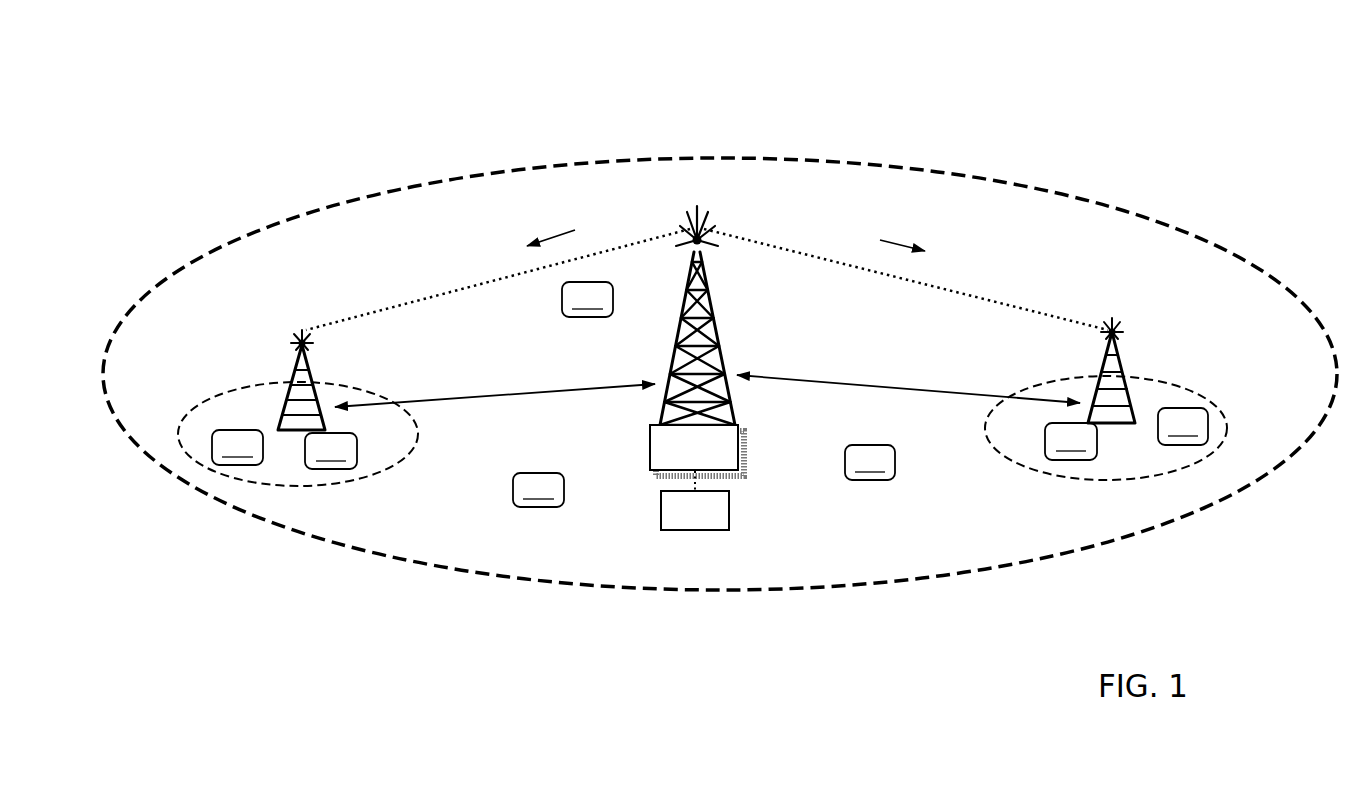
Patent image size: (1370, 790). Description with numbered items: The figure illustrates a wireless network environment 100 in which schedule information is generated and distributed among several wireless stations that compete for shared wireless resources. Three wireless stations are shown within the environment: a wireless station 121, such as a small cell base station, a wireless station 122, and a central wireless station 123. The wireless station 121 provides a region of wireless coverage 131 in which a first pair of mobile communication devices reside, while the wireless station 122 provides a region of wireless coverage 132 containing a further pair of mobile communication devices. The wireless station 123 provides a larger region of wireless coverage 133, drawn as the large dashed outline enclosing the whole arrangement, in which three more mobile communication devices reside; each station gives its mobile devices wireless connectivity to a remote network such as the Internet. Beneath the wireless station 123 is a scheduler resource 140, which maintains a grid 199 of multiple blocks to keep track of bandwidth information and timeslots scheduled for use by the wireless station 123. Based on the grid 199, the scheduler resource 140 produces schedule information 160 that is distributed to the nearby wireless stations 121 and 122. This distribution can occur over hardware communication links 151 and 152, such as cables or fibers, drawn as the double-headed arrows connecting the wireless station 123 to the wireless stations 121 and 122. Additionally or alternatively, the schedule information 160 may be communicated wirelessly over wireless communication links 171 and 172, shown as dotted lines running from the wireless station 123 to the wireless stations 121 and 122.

The wireless network environment 100 is at (301, 126).
The wireless station 121 is at (290, 373).
The wireless station 122 is at (1097, 365).
The wireless station 123 is at (722, 342).
The region of wireless coverage 131 is at (360, 385).
The region of wireless coverage 132 is at (1033, 472).
The region of wireless coverage 133 is at (800, 582).
The scheduler resource 140 is at (678, 458).
The hardware communication link 151 is at (523, 392).
The hardware communication link 152 is at (880, 382).
The schedule information 160 is at (586, 227).
The wireless communication link 171 is at (414, 300).
The wireless communication link 172 is at (1001, 297).
The grid 199 is at (679, 520).